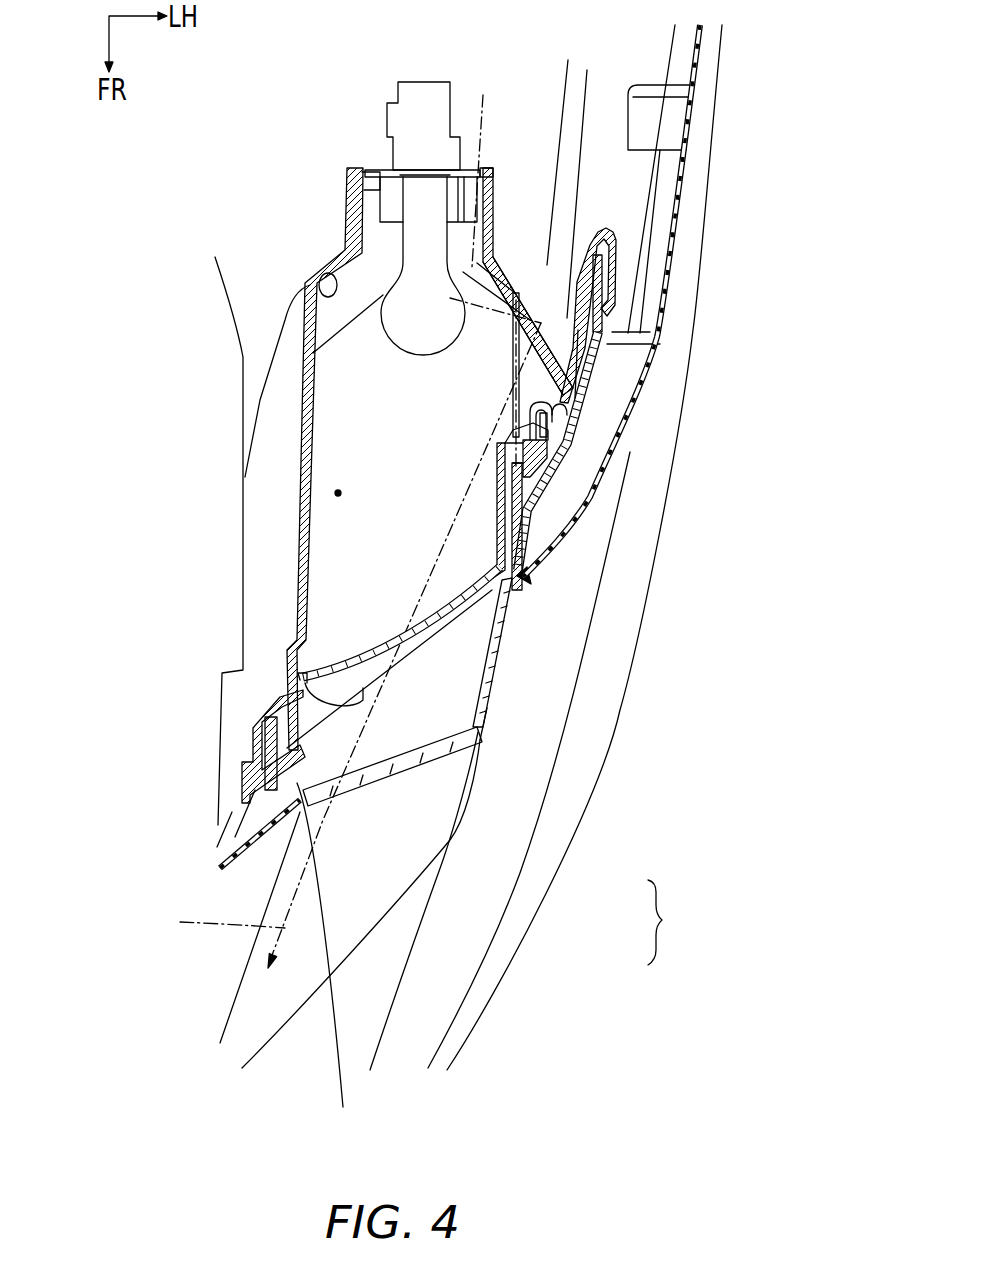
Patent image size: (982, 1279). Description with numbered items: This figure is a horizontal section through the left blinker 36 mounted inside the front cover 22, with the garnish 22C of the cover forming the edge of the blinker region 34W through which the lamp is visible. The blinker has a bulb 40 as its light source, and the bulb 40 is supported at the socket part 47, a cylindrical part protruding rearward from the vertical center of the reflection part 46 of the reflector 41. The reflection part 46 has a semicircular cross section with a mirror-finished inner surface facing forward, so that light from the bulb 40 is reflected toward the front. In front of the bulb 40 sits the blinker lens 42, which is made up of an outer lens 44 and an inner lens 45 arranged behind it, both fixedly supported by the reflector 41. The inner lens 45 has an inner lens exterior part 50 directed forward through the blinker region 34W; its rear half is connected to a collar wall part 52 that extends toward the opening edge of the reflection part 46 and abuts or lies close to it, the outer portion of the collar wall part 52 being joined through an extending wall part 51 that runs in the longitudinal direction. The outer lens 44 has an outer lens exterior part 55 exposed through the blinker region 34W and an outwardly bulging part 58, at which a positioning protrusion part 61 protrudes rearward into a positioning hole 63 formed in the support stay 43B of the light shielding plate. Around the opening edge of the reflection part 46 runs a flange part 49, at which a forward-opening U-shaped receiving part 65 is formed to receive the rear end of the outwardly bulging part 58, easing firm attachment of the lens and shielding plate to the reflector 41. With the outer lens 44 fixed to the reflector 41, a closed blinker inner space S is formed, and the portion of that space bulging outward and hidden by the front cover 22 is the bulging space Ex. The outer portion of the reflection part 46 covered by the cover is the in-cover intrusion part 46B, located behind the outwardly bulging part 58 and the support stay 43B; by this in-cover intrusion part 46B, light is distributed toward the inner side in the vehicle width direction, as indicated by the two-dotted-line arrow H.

The front cover 22 is at (594, 524).
The garnish 22C is at (228, 862).
The blinker region 34W is at (334, 963).
The left blinker 36 is at (520, 643).
The bulb 40 is at (403, 341).
The reflector 41 is at (515, 260).
The blinker lens 42 is at (670, 922).
The support stay 43B is at (523, 477).
The outer lens 44 is at (402, 783).
The inner lens 45 is at (431, 648).
The reflection part 46 is at (313, 283).
The in-cover intrusion part 46B is at (547, 313).
The socket part 47 is at (350, 208).
The flange part 49 is at (606, 232).
The inner lens exterior part 50 is at (300, 688).
The extending wall part 51 is at (497, 508).
The collar wall part 52 is at (530, 402).
The outer lens exterior part 55 is at (487, 708).
The outwardly bulging part 58 is at (554, 470).
The positioning protrusion part 61 is at (556, 420).
The positioning hole 63 is at (523, 463).
The receiving part 65 is at (604, 290).
The bulging space Ex is at (484, 166).
The blinker inner space S is at (336, 493).
The arrow H is at (217, 914).